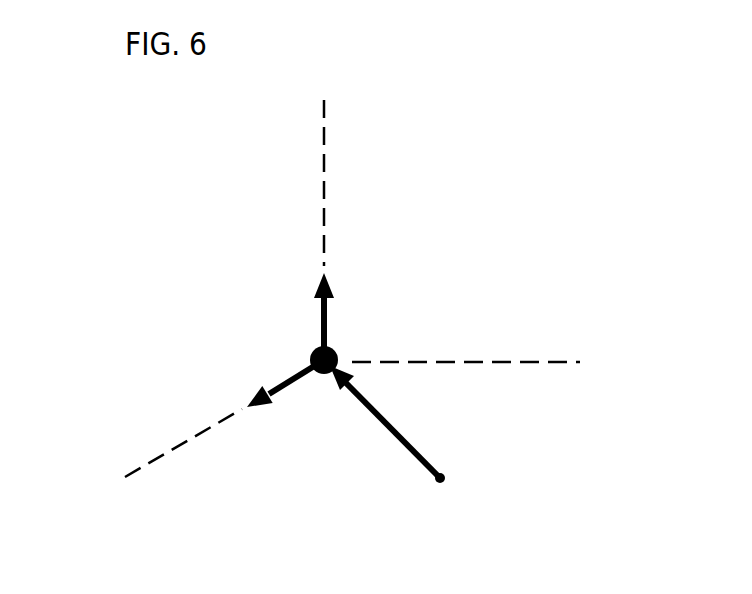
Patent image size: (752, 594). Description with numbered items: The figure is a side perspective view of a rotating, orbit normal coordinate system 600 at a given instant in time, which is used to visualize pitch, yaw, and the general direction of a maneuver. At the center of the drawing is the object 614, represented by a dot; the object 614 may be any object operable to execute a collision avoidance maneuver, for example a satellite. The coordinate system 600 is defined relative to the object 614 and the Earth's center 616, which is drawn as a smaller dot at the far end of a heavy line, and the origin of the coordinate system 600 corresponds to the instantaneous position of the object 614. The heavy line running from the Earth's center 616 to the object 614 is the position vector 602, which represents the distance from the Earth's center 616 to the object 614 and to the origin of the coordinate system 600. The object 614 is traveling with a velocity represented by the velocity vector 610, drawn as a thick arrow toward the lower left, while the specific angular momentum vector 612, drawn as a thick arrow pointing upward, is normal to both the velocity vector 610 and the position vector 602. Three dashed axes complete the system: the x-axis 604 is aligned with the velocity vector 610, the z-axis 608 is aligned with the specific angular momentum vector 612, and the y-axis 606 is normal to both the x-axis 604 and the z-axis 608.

The rotating, orbit normal coordinate system 600 is at (100, 163).
The position vector 602 is at (407, 443).
The x-axis 604 is at (167, 452).
The y-axis 606 is at (567, 362).
The z-axis 608 is at (323, 138).
The velocity vector 610 is at (302, 372).
The specific angular momentum vector 612 is at (326, 330).
The object 614 is at (328, 377).
The Earth's center 616 is at (442, 482).